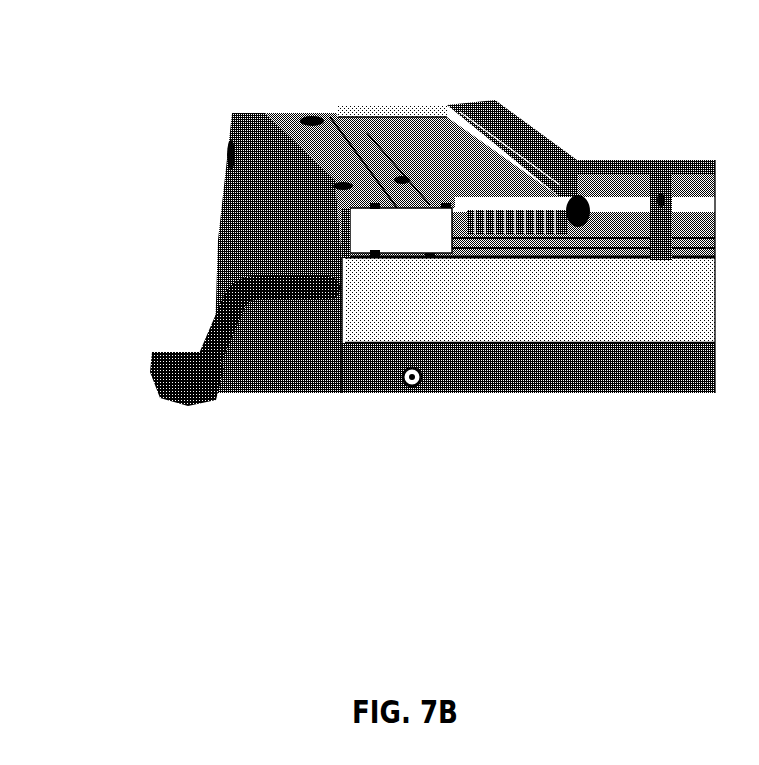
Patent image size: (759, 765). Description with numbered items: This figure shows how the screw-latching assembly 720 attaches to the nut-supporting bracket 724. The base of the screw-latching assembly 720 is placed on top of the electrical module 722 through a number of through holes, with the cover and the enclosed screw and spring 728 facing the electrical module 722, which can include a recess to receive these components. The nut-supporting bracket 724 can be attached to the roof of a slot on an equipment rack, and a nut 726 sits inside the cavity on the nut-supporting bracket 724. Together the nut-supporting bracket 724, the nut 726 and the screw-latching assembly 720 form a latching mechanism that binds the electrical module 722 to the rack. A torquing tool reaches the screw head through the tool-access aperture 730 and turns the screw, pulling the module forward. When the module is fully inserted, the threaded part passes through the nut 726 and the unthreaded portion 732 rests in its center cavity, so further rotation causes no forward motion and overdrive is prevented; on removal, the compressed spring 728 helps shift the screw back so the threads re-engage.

The screw-latching assembly 720 is at (325, 118).
The electrical module 722 is at (240, 268).
The nut-supporting bracket 724 is at (510, 113).
The nut 726 is at (660, 205).
The spring 728 is at (640, 205).
The tool-access aperture 730 is at (335, 225).
The unthreaded portion 732 is at (455, 228).